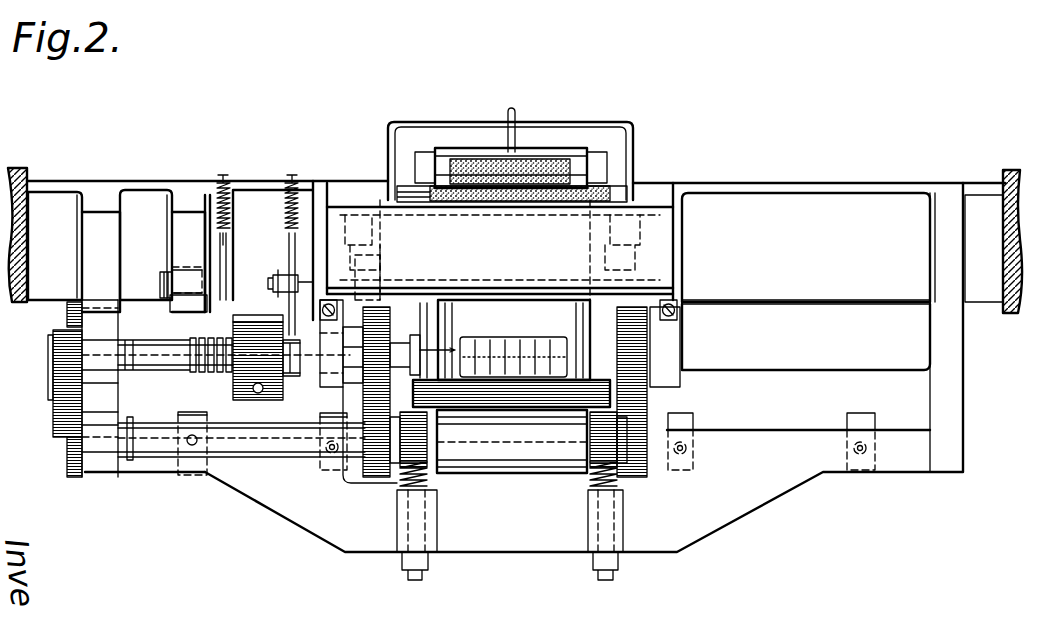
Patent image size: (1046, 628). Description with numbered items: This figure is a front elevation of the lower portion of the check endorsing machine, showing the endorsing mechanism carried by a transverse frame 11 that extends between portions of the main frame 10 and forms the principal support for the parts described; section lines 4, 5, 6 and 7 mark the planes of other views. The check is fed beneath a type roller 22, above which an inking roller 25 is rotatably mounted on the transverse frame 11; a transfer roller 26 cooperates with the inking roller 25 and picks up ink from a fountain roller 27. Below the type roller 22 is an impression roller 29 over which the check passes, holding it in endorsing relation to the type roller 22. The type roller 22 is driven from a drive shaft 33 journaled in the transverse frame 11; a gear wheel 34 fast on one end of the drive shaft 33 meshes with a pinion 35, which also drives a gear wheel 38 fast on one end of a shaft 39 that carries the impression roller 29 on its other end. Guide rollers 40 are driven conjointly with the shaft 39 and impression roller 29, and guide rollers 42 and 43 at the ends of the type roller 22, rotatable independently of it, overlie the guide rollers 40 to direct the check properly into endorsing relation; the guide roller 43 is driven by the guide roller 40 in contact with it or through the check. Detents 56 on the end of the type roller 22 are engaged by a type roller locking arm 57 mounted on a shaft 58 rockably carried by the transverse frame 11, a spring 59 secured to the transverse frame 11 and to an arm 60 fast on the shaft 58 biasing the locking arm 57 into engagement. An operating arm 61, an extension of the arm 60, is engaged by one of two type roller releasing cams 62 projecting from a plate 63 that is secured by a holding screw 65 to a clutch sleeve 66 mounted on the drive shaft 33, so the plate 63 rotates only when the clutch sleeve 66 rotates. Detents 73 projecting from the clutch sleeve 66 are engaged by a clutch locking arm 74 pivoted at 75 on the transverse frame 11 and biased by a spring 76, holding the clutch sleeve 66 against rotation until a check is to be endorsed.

The section line 4- 4 is at (513, 100).
The section line 5- 5 is at (35, 365).
The section line 6- 6 is at (306, 440).
The section line 7- 7 is at (313, 172).
The main frame 10 is at (20, 175).
The transverse frame 11 is at (815, 200).
The type roller 22 is at (533, 289).
The inking roller 25 is at (588, 188).
The transfer roller 26 is at (562, 170).
The fountain roller 27 is at (532, 150).
The impression roller 29 is at (535, 472).
The drive shaft 33 is at (150, 350).
The gear wheel 34 is at (66, 310).
The pinion 35 is at (55, 375).
The gear wheel 38 is at (68, 440).
The shaft 39 is at (258, 457).
The guide rollers 40 is at (375, 472).
The guide roller 42 is at (372, 380).
The guide roller 43 is at (650, 385).
The detents 56 is at (458, 312).
The type roller locking arm 57 is at (425, 320).
The shaft 58 is at (352, 300).
The spring 59 is at (288, 205).
The arm 60 is at (292, 240).
The operating arm 61 is at (290, 378).
The type roller releasing cams 62 is at (262, 392).
The plate 63 is at (282, 308).
The holding screw 65 is at (300, 356).
The clutch sleeve 66 is at (238, 318).
The detents 73 is at (206, 365).
The clutch locking arm 74 is at (218, 316).
The pivot 75 is at (188, 270).
The spring 76 is at (222, 205).